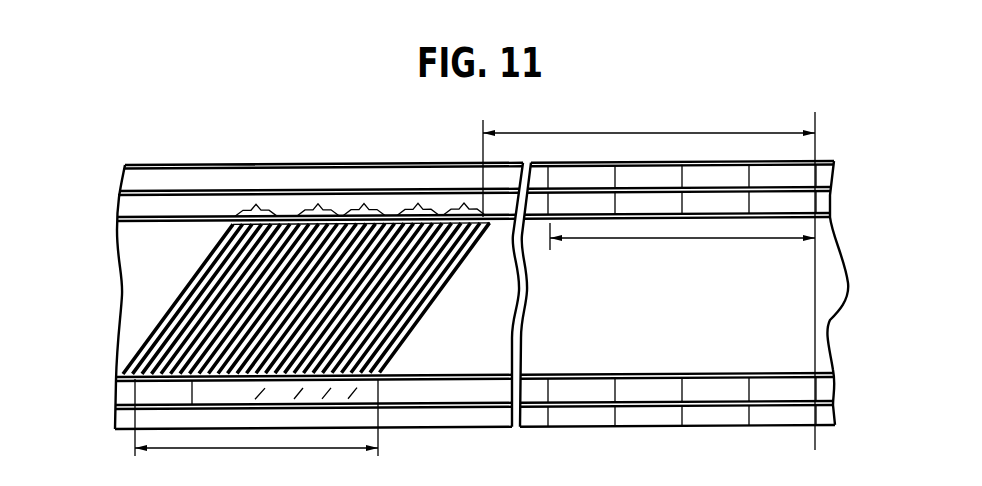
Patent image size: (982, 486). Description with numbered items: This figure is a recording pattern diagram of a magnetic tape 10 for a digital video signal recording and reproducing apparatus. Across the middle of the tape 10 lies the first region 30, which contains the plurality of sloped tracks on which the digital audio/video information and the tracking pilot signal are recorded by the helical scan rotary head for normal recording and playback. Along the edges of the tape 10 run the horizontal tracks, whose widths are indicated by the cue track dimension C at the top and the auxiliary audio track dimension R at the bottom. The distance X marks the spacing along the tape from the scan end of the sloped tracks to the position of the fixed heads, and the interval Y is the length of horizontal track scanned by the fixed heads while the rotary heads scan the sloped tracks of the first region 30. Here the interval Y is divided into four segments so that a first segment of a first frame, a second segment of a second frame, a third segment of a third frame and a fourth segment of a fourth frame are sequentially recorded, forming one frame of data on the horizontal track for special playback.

The tape 10 is at (843, 304).
The first region 30 is at (89, 222).
The dimension of a cue track C is at (89, 163).
The dimension of an auxiliary audio track R is at (89, 385).
The distance along the tape X is at (649, 278).
The interval along horizontal track Y is at (256, 430).